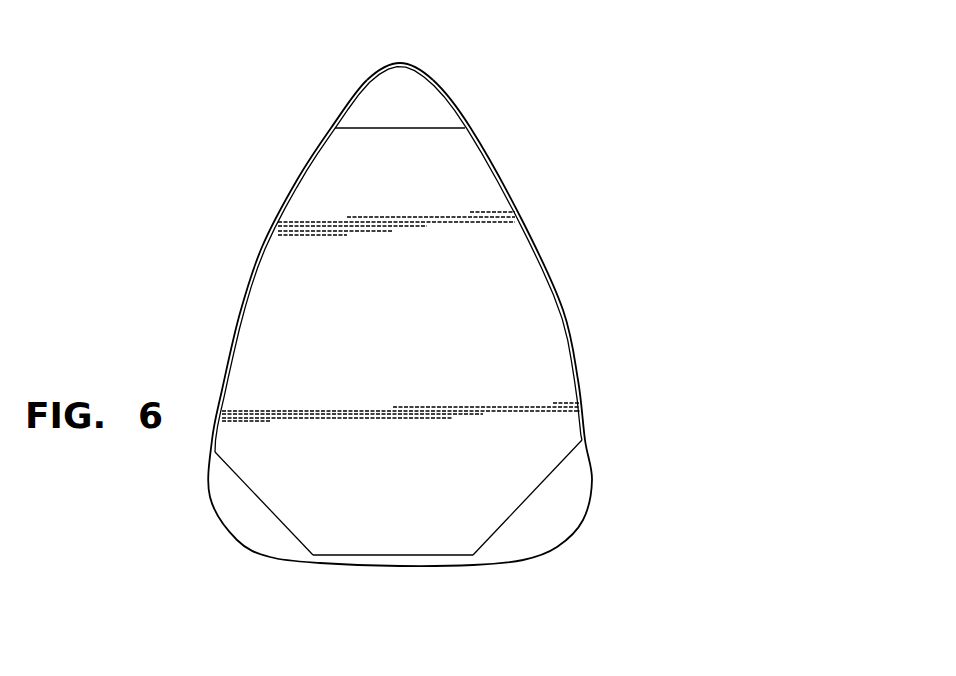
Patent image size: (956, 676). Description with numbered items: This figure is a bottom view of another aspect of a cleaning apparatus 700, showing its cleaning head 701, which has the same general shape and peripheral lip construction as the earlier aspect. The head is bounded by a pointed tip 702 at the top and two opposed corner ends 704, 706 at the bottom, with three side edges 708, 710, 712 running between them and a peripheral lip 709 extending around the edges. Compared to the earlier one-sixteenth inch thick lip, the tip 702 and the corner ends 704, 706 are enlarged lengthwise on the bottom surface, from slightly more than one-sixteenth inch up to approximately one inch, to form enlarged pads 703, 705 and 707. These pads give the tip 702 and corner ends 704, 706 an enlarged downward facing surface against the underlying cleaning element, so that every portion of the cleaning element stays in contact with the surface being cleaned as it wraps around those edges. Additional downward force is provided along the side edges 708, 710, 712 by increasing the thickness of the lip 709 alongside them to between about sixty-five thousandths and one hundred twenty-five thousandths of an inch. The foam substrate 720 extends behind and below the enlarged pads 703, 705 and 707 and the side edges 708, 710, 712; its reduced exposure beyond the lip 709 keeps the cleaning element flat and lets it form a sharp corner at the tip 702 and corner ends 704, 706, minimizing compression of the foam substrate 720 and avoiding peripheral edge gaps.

The cleaning apparatus 700 is at (585, 253).
The cleaning head 701 is at (542, 235).
The tip 702 is at (400, 62).
The enlarged pad 703 is at (417, 100).
The corner end 704 is at (213, 518).
The enlarged pad 705 is at (267, 533).
The corner end 706 is at (583, 520).
The enlarged pad 707 is at (543, 520).
The side edge 708 is at (308, 152).
The lip 709 is at (260, 248).
The side edge 710 is at (490, 148).
The side edge 712 is at (355, 565).
The foam substrate 720 is at (283, 325).